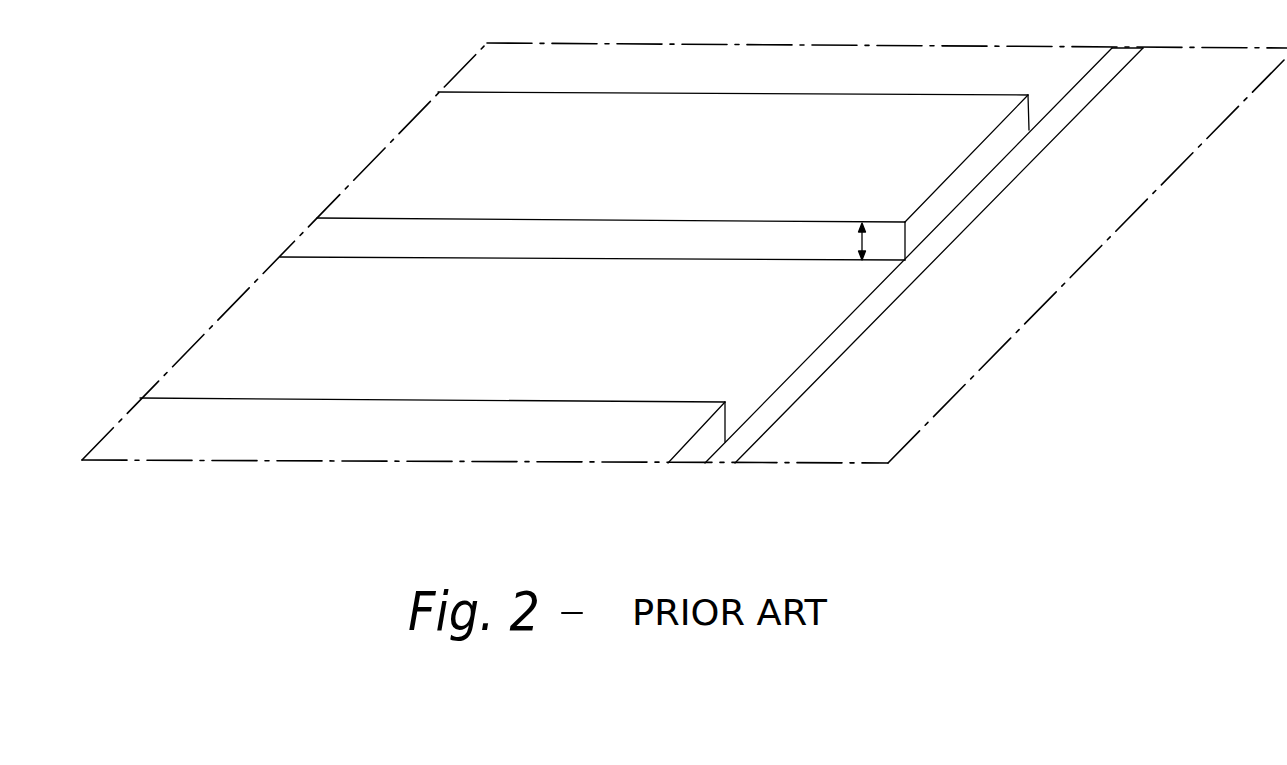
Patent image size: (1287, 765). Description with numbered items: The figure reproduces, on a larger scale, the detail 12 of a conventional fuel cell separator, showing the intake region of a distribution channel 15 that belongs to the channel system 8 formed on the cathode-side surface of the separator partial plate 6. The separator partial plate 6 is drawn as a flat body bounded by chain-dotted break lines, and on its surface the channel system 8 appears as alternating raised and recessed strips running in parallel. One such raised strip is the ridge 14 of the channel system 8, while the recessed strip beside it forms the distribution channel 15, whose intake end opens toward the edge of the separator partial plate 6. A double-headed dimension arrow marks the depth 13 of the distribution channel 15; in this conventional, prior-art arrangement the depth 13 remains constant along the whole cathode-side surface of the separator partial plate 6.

The separator partial plate 6 is at (150, 433).
The channel system 8 is at (415, 382).
The distribution channel 15 is at (272, 338).
The detail 12 is at (955, 393).
The depth 13 is at (866, 242).
The ridge 14 is at (445, 156).